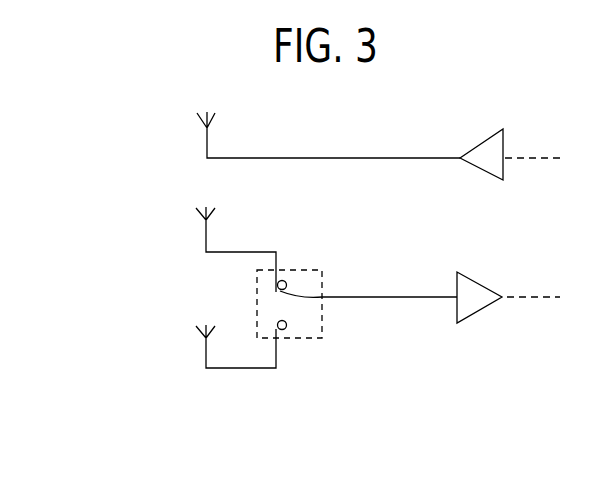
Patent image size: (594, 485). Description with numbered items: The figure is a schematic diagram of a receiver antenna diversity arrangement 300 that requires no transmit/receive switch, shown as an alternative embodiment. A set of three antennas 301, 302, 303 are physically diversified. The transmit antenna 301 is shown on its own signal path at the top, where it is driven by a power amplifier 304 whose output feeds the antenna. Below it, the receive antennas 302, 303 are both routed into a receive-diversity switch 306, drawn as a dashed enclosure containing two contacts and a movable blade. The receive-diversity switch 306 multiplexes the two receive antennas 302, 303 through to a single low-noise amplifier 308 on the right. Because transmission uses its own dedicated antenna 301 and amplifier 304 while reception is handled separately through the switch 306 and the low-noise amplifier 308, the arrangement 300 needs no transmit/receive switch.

The receiver antenna diversity arrangement 300 is at (464, 89).
The transmit antenna 301 is at (204, 138).
The receive antenna 302 is at (203, 233).
The receive antenna 303 is at (203, 348).
The power amplifier 304 is at (481, 175).
The receive-diversity switch 306 is at (307, 271).
The low-noise amplifier 308 is at (455, 310).